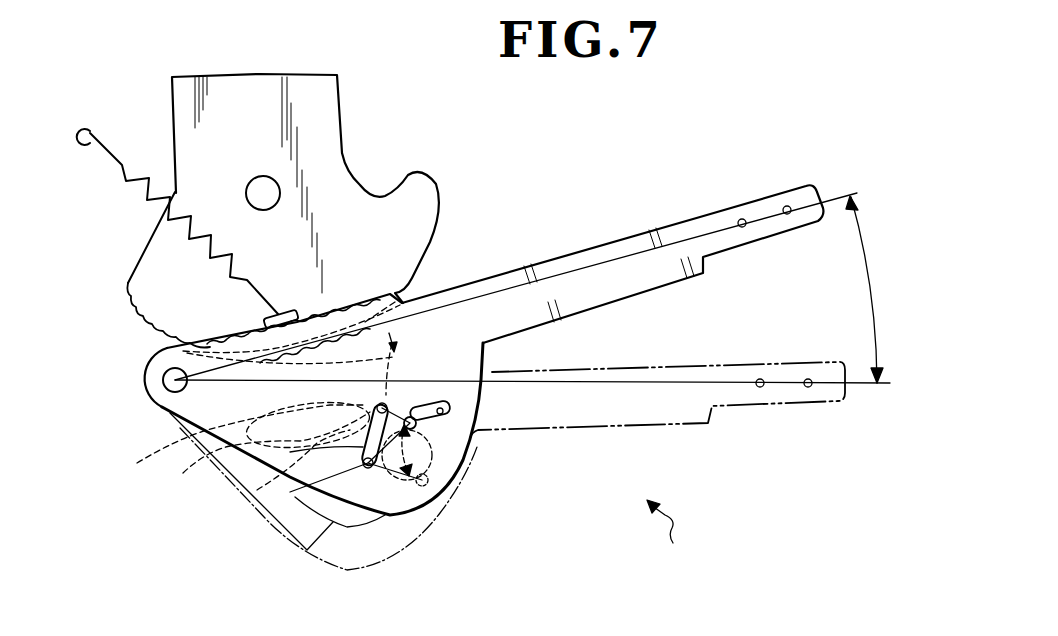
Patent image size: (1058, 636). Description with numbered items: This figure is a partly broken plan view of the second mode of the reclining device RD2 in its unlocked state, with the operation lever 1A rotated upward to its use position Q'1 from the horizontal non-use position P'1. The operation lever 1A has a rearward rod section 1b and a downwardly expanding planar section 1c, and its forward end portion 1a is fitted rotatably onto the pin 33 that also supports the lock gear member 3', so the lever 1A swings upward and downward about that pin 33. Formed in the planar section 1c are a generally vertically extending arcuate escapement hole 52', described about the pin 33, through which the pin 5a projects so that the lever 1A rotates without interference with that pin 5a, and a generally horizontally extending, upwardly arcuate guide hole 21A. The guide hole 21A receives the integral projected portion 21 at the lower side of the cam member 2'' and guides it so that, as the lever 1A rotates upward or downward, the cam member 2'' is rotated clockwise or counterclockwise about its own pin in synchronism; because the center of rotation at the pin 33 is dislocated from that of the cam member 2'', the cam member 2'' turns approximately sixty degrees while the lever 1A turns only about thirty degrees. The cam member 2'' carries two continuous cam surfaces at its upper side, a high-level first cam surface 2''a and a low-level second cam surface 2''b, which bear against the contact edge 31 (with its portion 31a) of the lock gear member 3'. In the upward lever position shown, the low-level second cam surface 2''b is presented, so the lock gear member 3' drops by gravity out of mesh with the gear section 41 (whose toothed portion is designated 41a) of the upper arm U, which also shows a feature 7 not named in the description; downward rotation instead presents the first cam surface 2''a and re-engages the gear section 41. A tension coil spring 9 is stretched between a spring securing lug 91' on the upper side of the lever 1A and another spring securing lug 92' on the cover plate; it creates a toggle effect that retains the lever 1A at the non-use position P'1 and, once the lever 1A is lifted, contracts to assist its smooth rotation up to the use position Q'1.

The upper arm U is at (337, 117).
The hole 7 is at (251, 180).
The tension coil spring 9 is at (216, 242).
The spring securing lug 92' is at (96, 101).
The spring securing lug 91' is at (252, 311).
The gear section 41 is at (157, 270).
The teeth of sector member 41a is at (150, 327).
The forward end portion 1a is at (185, 400).
The rearward rod section 1b is at (627, 240).
The operation lever 1A is at (723, 205).
The downwardly expanding planar section 1c is at (404, 515).
The pin 33 is at (172, 381).
The contact edge 31 is at (257, 457).
The rack teeth 31a is at (405, 302).
The cam member 2'' is at (355, 502).
The first cam surface 2''a is at (258, 486).
The second cam surface 2''b is at (259, 445).
The lock gear member 3' is at (240, 445).
The pin 5a is at (368, 463).
The escapement hole 52' is at (242, 527).
The projected portion 21 is at (411, 416).
The guide hole 21A is at (447, 413).
The use position Q'1 is at (886, 193).
The non-use position P'1 is at (914, 385).
The second mode of reclining device RD2 is at (684, 544).